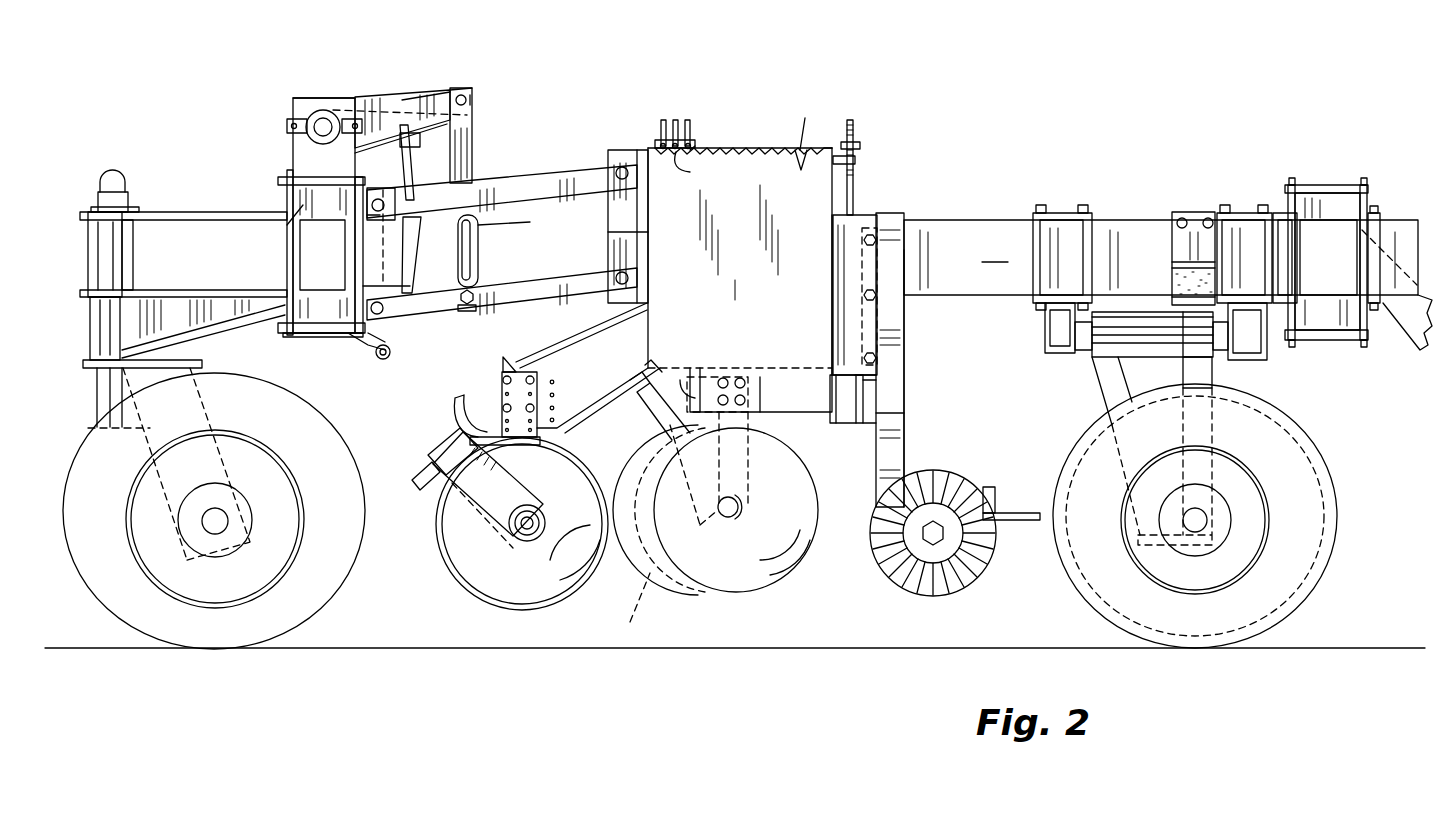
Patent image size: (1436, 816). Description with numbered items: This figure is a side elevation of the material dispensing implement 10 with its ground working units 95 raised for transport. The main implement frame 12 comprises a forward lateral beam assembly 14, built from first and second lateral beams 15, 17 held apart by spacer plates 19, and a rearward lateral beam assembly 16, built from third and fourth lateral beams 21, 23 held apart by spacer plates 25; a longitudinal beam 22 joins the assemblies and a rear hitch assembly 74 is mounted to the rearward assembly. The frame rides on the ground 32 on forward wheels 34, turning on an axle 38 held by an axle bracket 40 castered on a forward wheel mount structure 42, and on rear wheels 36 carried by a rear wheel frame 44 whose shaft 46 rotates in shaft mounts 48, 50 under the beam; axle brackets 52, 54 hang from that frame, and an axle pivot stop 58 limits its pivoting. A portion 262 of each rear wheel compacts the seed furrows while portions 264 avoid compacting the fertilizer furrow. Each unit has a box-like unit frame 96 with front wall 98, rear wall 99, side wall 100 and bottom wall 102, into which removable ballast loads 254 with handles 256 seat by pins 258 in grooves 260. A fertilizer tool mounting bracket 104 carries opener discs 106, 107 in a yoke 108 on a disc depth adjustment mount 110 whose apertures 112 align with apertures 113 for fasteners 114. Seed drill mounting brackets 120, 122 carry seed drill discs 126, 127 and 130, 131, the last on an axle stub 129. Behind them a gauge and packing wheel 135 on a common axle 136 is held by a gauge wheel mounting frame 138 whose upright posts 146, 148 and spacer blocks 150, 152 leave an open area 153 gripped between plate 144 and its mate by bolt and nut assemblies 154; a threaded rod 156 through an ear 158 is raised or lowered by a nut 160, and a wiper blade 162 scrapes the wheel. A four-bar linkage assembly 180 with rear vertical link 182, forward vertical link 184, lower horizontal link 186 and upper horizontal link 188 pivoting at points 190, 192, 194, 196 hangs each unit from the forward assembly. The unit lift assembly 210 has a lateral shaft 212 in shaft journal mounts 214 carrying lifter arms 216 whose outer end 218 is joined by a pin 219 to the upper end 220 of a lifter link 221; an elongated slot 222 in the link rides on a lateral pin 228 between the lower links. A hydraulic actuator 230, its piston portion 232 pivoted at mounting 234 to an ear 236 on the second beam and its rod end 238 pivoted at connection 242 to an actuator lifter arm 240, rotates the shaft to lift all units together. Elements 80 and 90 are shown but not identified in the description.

The material dispensing implement 10 is at (963, 152).
The main implement frame 12 is at (990, 221).
The forward lateral beam assembly 14 is at (312, 185).
The first lateral beam 15 is at (295, 215).
The rearward lateral beam assembly 16 is at (1335, 180).
The second lateral beam 17 is at (310, 332).
The spacer plates 19 is at (302, 222).
The third lateral beam 21 is at (1345, 207).
The longitudinal beam 22 is at (994, 252).
The fourth lateral beam 23 is at (1335, 340).
The spacer plates 25 is at (1352, 275).
The ground 32 is at (398, 645).
The forward wheels 34 is at (345, 575).
The rear wheels 36 is at (1326, 600).
The axle 38 is at (228, 517).
The axle bracket 40 is at (90, 320).
The forward wheel mount structure 42 is at (185, 228).
The rear wheel frame 44 is at (1137, 304).
The shaft 46 is at (1082, 352).
The shaft mount 48 is at (1050, 355).
The shaft mount 50 is at (1255, 358).
The axle bracket 52 is at (1098, 420).
The axle bracket 54 is at (1240, 402).
The axle pivot stop 58 is at (1168, 260).
The rear hitch assembly 74 is at (1408, 335).
The hydraulic hose 80 is at (455, 400).
The hose bracket 90 is at (650, 412).
The ground working unit 95 is at (815, 112).
The unit frame 96 is at (765, 141).
The front wall 98 is at (650, 230).
The rear wall 99 is at (830, 242).
The side wall 100 is at (730, 280).
The bottom wall 102 is at (728, 370).
The fertilizer tool mounting bracket 104 is at (580, 347).
The opener disc 106 is at (465, 600).
The opener disc 107 is at (560, 595).
The yoke 108 is at (488, 530).
The disc depth adjustment mount 110 is at (500, 410).
The apertures 112 is at (503, 392).
The apertures 113 is at (555, 380).
The bolt and nut fasteners 114 is at (506, 362).
The seed drill mounting bracket 120 is at (680, 378).
The seed drill mounting bracket 122 is at (762, 380).
The first seed drill disc 126 is at (628, 618).
The second seed drill disc 127 is at (660, 590).
The fourth axle stub 129 is at (728, 518).
The third seed drill disc 130 is at (730, 592).
The fourth seed drill disc 131 is at (775, 580).
The gauge and packing wheel 135 is at (955, 580).
The common axle 136 is at (945, 538).
The gauge wheel mounting frame 138 is at (914, 416).
The plate 144 is at (900, 330).
The upright post 146 is at (840, 424).
The upright post 148 is at (904, 445).
The spacer block 150 is at (870, 215).
The spacer block 152 is at (868, 425).
The open area 153 is at (866, 376).
The bolt and nut assemblies 154 is at (878, 240).
The threaded rod 156 is at (852, 122).
The ear 158 is at (856, 160).
The nut 160 is at (860, 145).
The wiper blade 162 is at (1005, 518).
The four-bar linkage assembly 180 is at (543, 167).
The rear vertical link 182 is at (608, 237).
The forward vertical link 184 is at (400, 282).
The lower horizontal link 186 is at (530, 290).
The upper horizontal link 188 is at (548, 178).
The pivot point 190 is at (630, 176).
The pivot point 192 is at (380, 197).
The pivot point 194 is at (385, 315).
The pivot point 196 is at (630, 278).
The unit lift assembly 210 is at (409, 42).
The lateral shaft 212 is at (325, 110).
The shaft journal mounts 214 is at (300, 97).
The lifter arm 216 is at (385, 95).
The outer end 218 is at (467, 100).
The pin 219 is at (472, 103).
The upper end 220 is at (470, 90).
The lifter link 221 is at (488, 221).
The elongated slot 222 is at (470, 238).
The lateral pin 228 is at (464, 312).
The hydraulic actuator 230 is at (410, 232).
The piston portion 232 is at (412, 256).
The pivot mounting 234 is at (385, 360).
The ear 236 is at (350, 335).
The rod end 238 is at (412, 176).
The actuator lifter arm 240 is at (415, 110).
The pivot connection 242 is at (455, 95).
The removable ballast loads 254 is at (705, 138).
The handle 256 is at (686, 120).
The pins 258 is at (690, 165).
The grooves 260 is at (798, 170).
The portion 262 is at (1332, 473).
The portions 264 is at (1330, 508).